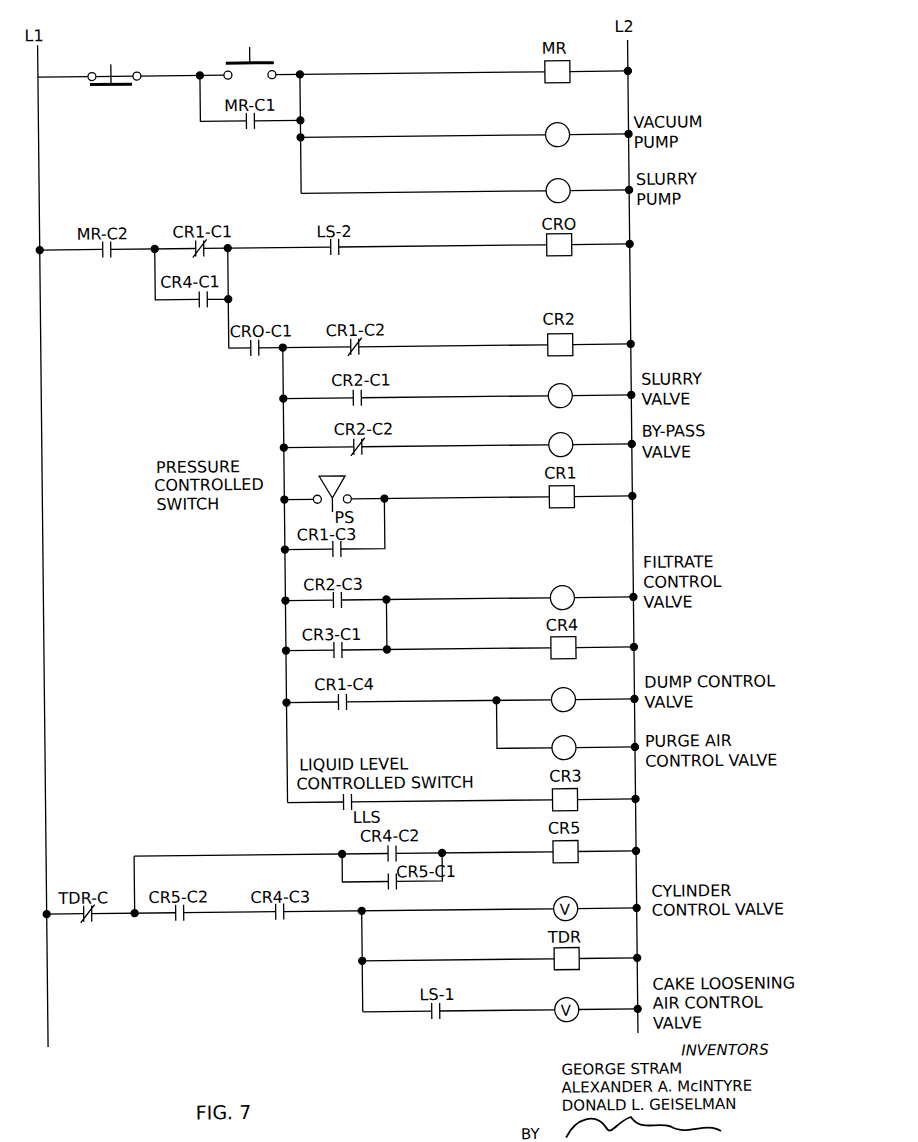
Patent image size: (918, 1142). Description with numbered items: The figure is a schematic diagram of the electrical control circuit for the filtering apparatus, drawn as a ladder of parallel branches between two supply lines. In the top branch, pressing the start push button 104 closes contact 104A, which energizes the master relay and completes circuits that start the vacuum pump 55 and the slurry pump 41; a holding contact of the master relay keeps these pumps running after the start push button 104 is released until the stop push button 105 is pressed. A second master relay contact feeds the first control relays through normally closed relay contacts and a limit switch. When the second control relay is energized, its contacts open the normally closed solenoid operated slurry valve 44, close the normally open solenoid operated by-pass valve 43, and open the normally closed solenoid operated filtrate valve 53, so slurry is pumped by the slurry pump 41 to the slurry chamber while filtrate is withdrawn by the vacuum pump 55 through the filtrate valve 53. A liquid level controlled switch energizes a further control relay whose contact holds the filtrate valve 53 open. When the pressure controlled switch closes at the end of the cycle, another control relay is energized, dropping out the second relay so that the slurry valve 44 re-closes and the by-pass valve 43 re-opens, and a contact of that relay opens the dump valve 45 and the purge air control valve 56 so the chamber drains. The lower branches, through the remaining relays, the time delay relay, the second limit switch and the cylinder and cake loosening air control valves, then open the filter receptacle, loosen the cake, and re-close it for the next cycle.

The stop push button 105 is at (120, 70).
The start push button 104 is at (258, 53).
The contact 104A is at (281, 73).
The vacuum pump 55 is at (552, 130).
The slurry pump 41 is at (559, 185).
The slurry valve 44 is at (552, 394).
The by-pass valve 43 is at (553, 443).
The filtrate valve 53 is at (550, 590).
The dump valve 45 is at (551, 693).
The purge air control valve 56 is at (553, 742).